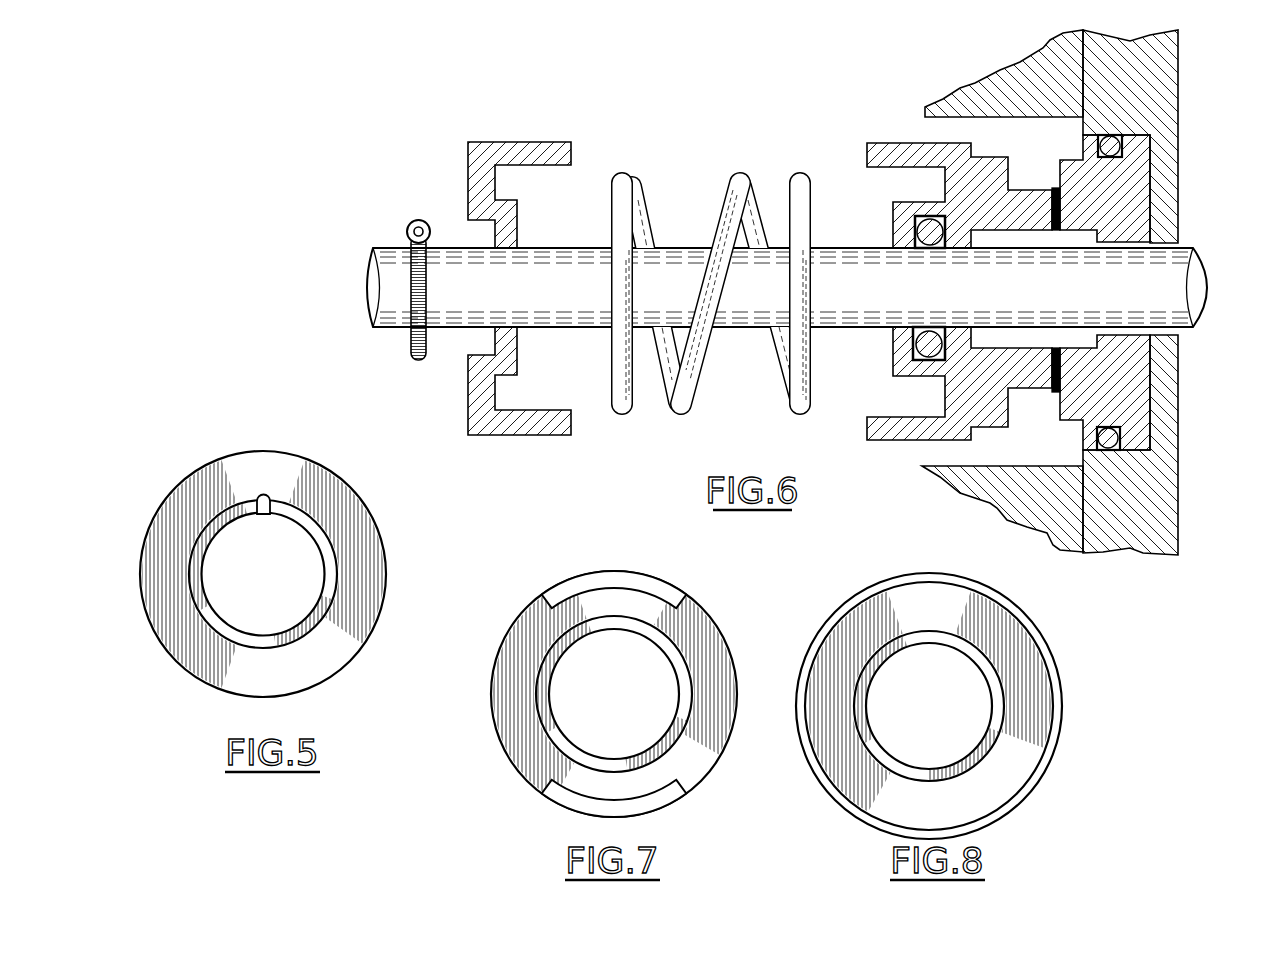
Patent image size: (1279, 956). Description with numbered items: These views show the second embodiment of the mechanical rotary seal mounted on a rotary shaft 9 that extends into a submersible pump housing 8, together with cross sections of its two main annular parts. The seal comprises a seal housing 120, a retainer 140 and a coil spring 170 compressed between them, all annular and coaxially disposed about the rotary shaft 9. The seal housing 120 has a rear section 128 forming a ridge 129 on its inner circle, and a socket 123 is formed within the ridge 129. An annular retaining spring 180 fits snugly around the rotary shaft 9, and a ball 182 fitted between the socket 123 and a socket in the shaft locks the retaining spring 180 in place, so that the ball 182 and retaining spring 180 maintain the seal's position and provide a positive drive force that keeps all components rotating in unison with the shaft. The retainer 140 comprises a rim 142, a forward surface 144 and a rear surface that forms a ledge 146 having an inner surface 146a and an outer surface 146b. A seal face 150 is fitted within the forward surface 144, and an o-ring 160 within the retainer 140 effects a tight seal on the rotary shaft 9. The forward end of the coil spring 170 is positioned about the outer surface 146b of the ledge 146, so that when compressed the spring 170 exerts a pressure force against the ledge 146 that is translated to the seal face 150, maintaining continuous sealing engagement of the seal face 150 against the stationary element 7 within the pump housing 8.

In FIG. 6, the stationary element 7 is at (1080, 208).
In FIG. 6, the submersible pump housing 8 is at (1190, 147).
In FIG. 6, the rotary shaft 9 is at (1194, 258).
In FIG. 6, the seal housing 120 is at (500, 128).
In FIG. 5, the seal housing 120 is at (393, 532).
In FIG. 5, the socket 123 is at (262, 494).
In FIG. 5, the rear section 128 is at (367, 592).
In FIG. 5, the ridge 129 is at (196, 571).
In FIG. 6, the retainer 140 is at (889, 452).
In FIG. 7, the retainer 140 is at (710, 591).
In FIG. 8, the rim 142 is at (1047, 657).
In FIG. 8, the forward surface 144 is at (1025, 713).
In FIG. 7, the ledge 146 is at (680, 730).
In FIG. 7, the inner surface 146a is at (602, 627).
In FIG. 7, the outer surface 146b is at (548, 747).
In FIG. 6, the seal face 150 is at (1052, 205).
In FIG. 8, the seal face 150 is at (988, 733).
In FIG. 6, the o-ring 160 is at (920, 230).
In FIG. 6, the coil spring 170 is at (724, 160).
In FIG. 6, the annular retaining spring 180 is at (405, 348).
In FIG. 6, the ball 182 is at (413, 224).